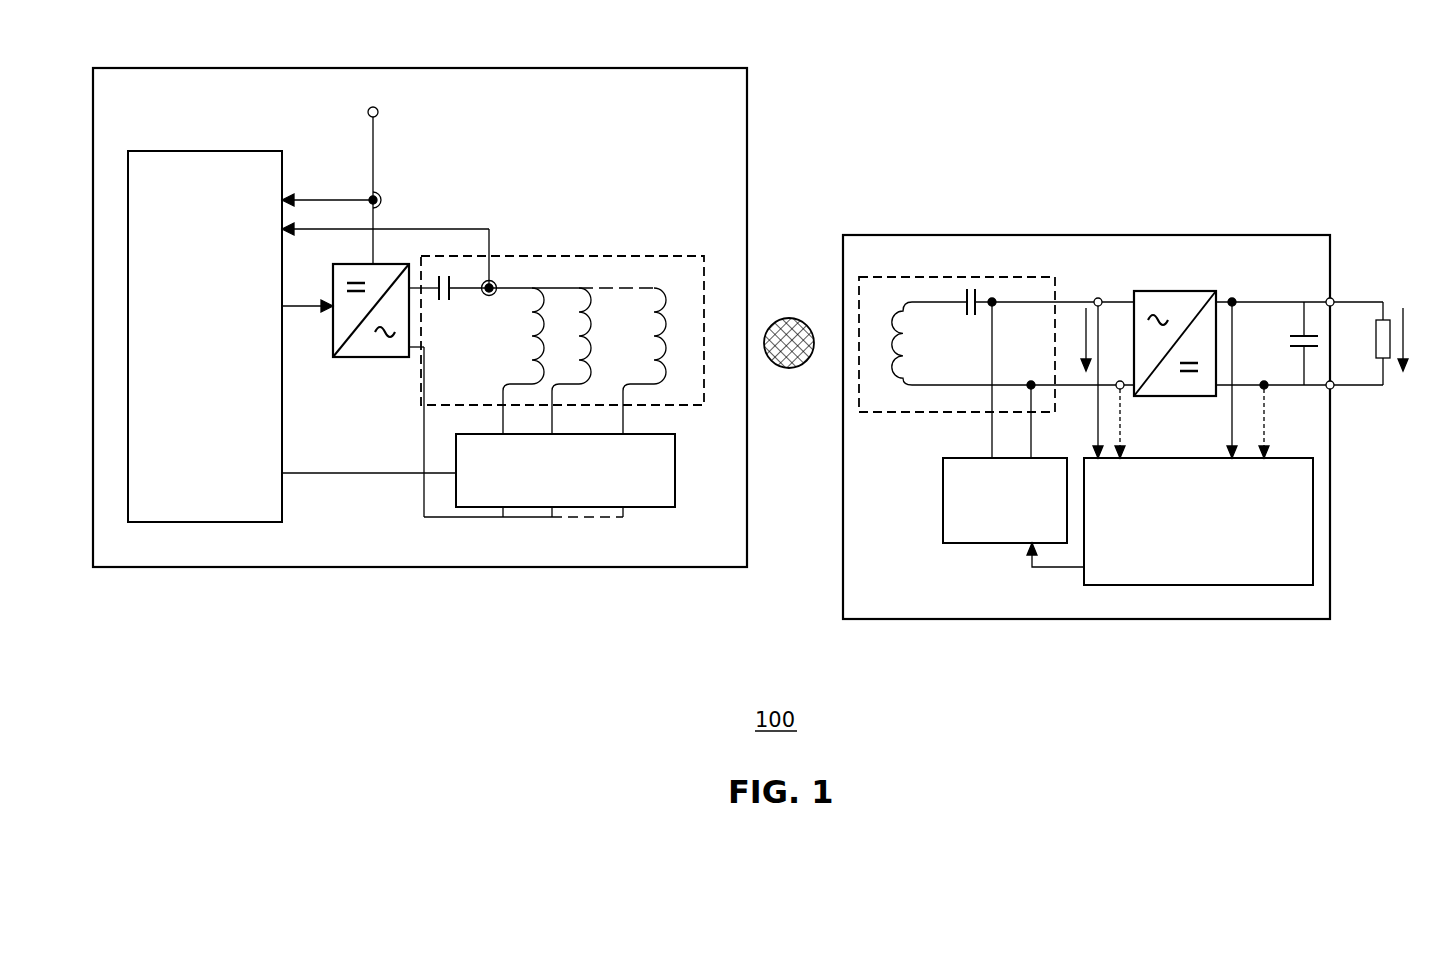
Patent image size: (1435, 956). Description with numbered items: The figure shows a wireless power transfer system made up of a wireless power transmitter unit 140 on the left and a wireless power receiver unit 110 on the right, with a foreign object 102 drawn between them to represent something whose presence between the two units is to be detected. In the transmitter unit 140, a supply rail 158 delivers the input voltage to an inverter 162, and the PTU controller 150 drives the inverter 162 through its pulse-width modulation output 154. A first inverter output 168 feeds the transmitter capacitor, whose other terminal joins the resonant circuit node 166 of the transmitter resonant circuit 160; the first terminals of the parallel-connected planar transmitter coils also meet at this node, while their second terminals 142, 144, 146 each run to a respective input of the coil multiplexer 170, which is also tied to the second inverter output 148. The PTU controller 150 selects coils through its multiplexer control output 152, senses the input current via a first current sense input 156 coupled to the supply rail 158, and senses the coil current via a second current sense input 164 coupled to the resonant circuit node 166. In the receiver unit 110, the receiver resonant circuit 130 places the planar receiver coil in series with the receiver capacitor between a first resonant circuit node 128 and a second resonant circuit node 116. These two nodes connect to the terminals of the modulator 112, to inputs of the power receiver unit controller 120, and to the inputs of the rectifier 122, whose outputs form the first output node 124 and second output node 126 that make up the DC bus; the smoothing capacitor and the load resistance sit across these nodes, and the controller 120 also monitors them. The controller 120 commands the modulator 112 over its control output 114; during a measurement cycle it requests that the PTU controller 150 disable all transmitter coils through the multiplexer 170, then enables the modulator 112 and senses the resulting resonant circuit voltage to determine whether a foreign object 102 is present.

The foreign object 102 is at (802, 363).
The wireless power receiver unit 110 is at (1032, 620).
The modulator 112 is at (978, 545).
The control output 114 is at (1040, 573).
The second resonant circuit node 116 is at (1030, 383).
The power receiver unit controller 120 is at (1138, 458).
The rectifier 122 is at (1157, 291).
The first output node 124 is at (1332, 300).
The second output node 126 is at (1332, 388).
The first resonant circuit node 128 is at (1086, 300).
The resonant circuit 130 is at (985, 277).
The wireless power transmitter unit 140 is at (403, 568).
The second terminal of planar coil Lt1 142 is at (512, 384).
The second terminal of planar coil Lt2 144 is at (552, 387).
The second terminal of planar coil Ltm 146 is at (624, 421).
The second inverter output 148 is at (497, 517).
The PTU controller 150 is at (208, 522).
The multiplexer control output 152 is at (325, 473).
The pulse-width modulation output 154 is at (305, 308).
The first current sense input 156 is at (357, 198).
The supply rail 158 is at (383, 100).
The resonant circuit 160 is at (655, 257).
The inverter 162 is at (383, 262).
The second current sense input 164 is at (489, 229).
The resonant circuit node 166 is at (523, 288).
The first inverter output 168 is at (432, 292).
The coil multiplexer 170 is at (650, 509).